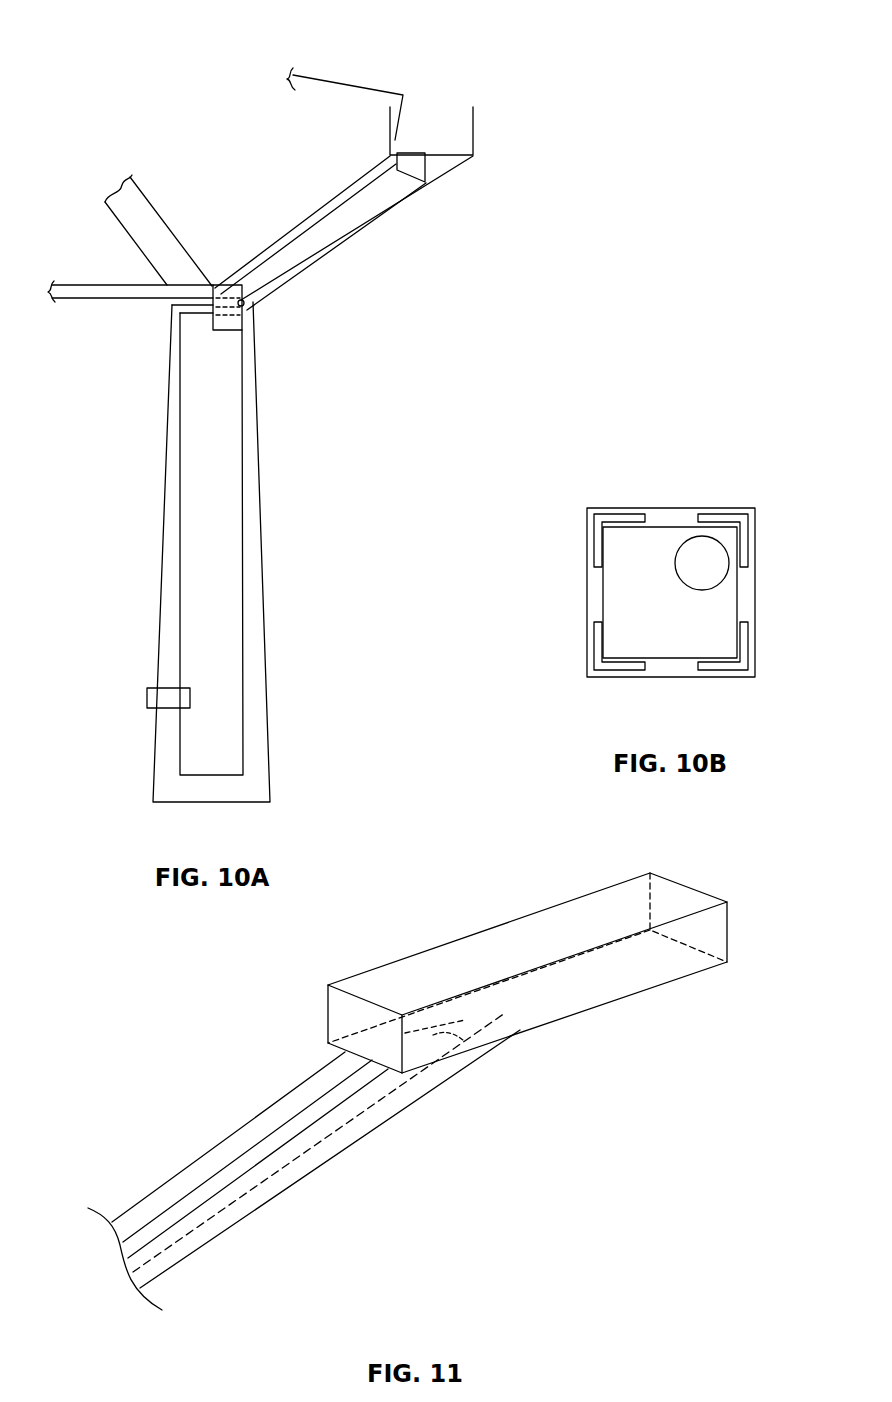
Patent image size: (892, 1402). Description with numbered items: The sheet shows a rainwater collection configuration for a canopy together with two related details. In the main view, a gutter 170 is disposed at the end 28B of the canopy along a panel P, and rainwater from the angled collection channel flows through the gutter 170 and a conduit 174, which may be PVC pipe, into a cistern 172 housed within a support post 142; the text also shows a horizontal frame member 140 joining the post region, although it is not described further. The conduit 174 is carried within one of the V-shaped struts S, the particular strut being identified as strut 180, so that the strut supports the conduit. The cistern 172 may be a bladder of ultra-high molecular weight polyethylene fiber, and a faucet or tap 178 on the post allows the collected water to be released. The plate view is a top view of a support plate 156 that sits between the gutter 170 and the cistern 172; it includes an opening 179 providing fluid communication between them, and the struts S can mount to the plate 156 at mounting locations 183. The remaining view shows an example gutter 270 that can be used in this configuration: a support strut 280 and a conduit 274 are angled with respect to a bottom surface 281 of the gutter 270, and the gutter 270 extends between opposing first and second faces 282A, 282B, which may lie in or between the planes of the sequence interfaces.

In FIG. 10A, the panel P is at (330, 82).
In FIG. 10A, the V-shaped strut S is at (140, 207).
In FIG. 10A, the end of the canopy 28B is at (470, 58).
In FIG. 10A, the horizontal frame member 140 is at (73, 294).
In FIG. 10A, the support post 142 is at (262, 553).
In FIG. 10B, the support post 142 is at (593, 598).
In FIG. 10A, the support plate 156 is at (173, 302).
In FIG. 10B, the support plate 156 is at (668, 538).
In FIG. 10A, the gutter 170 is at (474, 132).
In FIG. 10A, the cistern 172 is at (247, 493).
In FIG. 10A, the conduit 174 is at (320, 240).
In FIG. 10A, the faucet and/or tap 178 is at (147, 700).
In FIG. 10B, the opening 179 is at (730, 572).
In FIG. 10A, the V-shaped strut 180 is at (328, 207).
In FIG. 10B, the mounting locations 183 is at (722, 513).
In FIG. 11, the gutter 270 is at (653, 967).
In FIG. 11, the conduit 274 is at (257, 1155).
In FIG. 11, the support strut 280 is at (247, 1123).
In FIG. 11, the bottom surface 281 is at (542, 1007).
In FIG. 11, the first face 282A is at (338, 1010).
In FIG. 11, the second face 282B is at (707, 888).